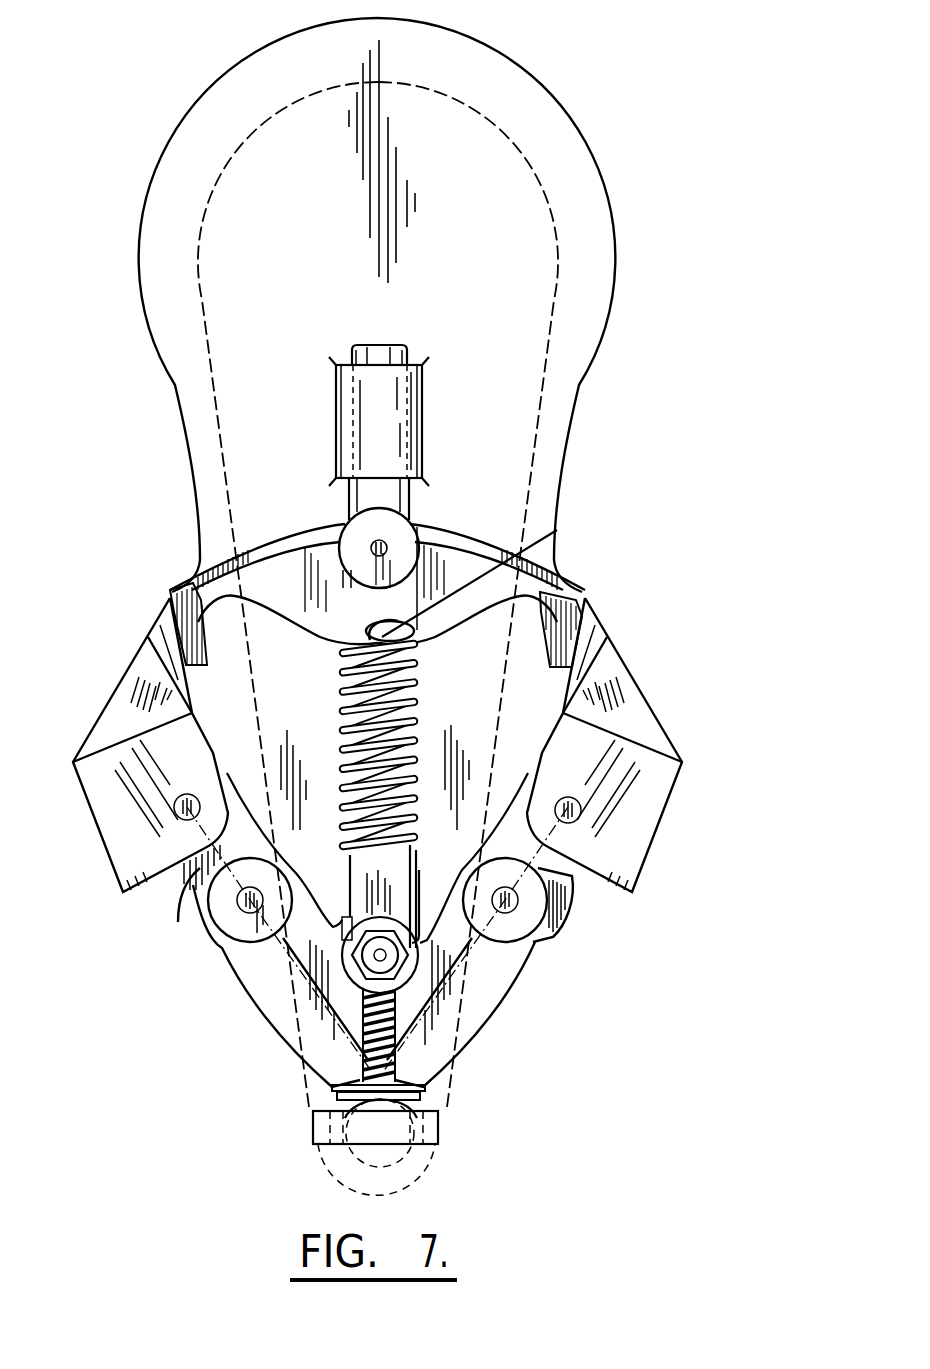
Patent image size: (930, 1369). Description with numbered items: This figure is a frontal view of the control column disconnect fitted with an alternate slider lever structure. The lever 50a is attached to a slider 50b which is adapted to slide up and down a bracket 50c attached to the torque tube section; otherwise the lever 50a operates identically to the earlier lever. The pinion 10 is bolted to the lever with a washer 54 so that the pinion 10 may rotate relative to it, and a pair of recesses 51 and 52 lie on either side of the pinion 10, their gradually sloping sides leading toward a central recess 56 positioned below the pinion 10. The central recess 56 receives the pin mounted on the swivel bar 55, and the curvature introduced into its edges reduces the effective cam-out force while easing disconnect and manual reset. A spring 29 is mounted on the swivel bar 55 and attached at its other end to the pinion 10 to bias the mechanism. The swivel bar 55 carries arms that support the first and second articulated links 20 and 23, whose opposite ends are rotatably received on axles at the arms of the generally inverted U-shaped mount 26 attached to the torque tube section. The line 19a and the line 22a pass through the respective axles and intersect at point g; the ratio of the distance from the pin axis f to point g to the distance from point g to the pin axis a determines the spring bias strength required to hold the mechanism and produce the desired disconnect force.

The pinion 10 is at (347, 526).
The bracket 50c is at (420, 410).
The slider 50b is at (415, 500).
The lever 50a is at (555, 572).
The recess 51 is at (178, 586).
The recess 52 is at (580, 600).
The washer 54 is at (405, 540).
The central recess 56 is at (553, 529).
The axis of the pin f is at (410, 643).
The spring 29 is at (342, 690).
The swivel bar 55 is at (420, 728).
The mount 26 is at (106, 715).
The line 19a is at (180, 924).
The first articulated link 20 is at (222, 946).
The line 22a is at (578, 885).
The second articulated link 23 is at (556, 937).
The intersection point g is at (400, 1081).
The axis of pin a is at (383, 1132).